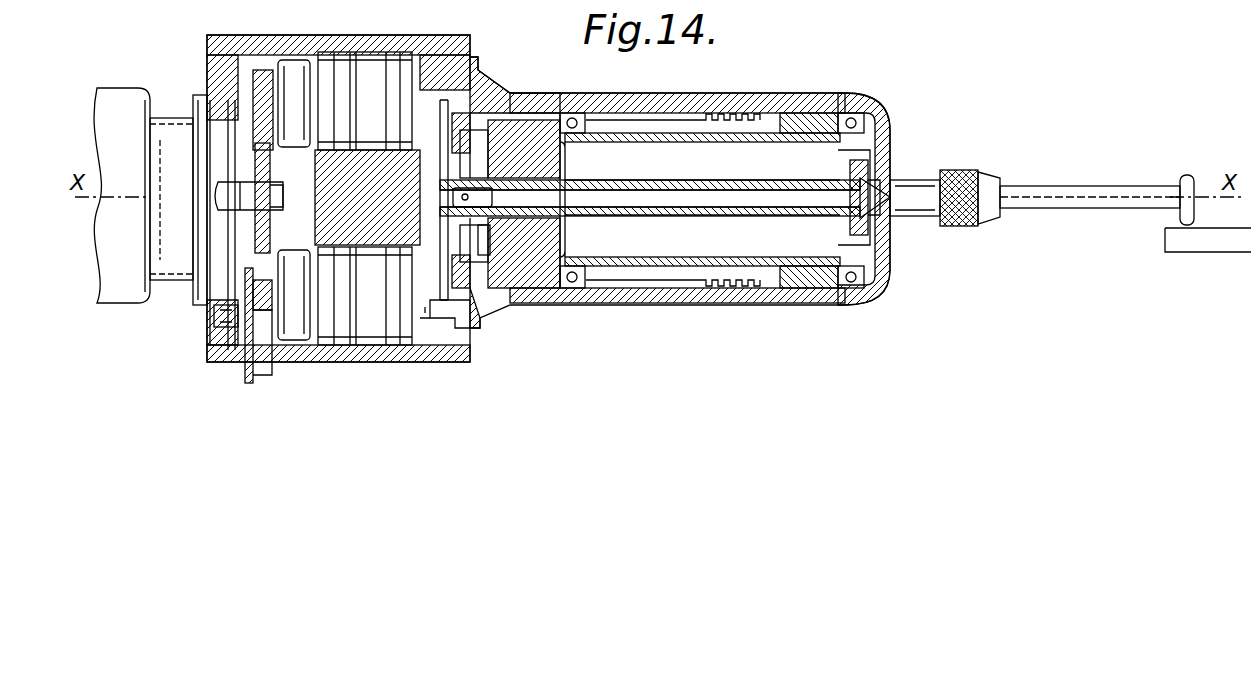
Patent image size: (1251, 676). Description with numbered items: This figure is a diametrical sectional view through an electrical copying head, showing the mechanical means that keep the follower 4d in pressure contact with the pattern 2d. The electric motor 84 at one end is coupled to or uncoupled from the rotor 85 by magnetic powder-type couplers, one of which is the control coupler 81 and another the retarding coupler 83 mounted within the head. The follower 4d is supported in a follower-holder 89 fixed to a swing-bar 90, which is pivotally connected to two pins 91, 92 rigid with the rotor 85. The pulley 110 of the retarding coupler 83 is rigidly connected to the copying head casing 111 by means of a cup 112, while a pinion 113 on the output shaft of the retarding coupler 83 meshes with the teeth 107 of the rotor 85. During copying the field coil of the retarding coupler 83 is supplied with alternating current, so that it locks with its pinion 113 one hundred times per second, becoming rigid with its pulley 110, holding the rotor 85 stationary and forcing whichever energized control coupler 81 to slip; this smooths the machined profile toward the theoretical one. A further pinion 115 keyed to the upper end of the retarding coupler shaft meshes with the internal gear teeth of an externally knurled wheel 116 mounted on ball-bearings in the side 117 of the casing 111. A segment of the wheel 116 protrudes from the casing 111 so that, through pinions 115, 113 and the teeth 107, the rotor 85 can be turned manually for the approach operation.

The pattern 2d is at (1188, 246).
The follower 4d is at (1188, 178).
The magnetic powder-type coupler 81 is at (372, 64).
The retarding coupler 83 is at (378, 330).
The electric motor 84 is at (123, 98).
The rotor 85 is at (558, 243).
The follower-holder 89 is at (913, 182).
The swing-bar 90 is at (633, 183).
The pin 91 is at (490, 243).
The pin 92 is at (842, 252).
The teeth of rotor 107 is at (452, 262).
The pulley of retarding coupler 110 is at (295, 320).
The copying head casing 111 is at (325, 357).
The cup 112 is at (278, 250).
The pinion 113 is at (437, 320).
The pinion 115 is at (240, 282).
The externally knurled wheel 116 is at (255, 372).
The side of casing 117 is at (218, 308).